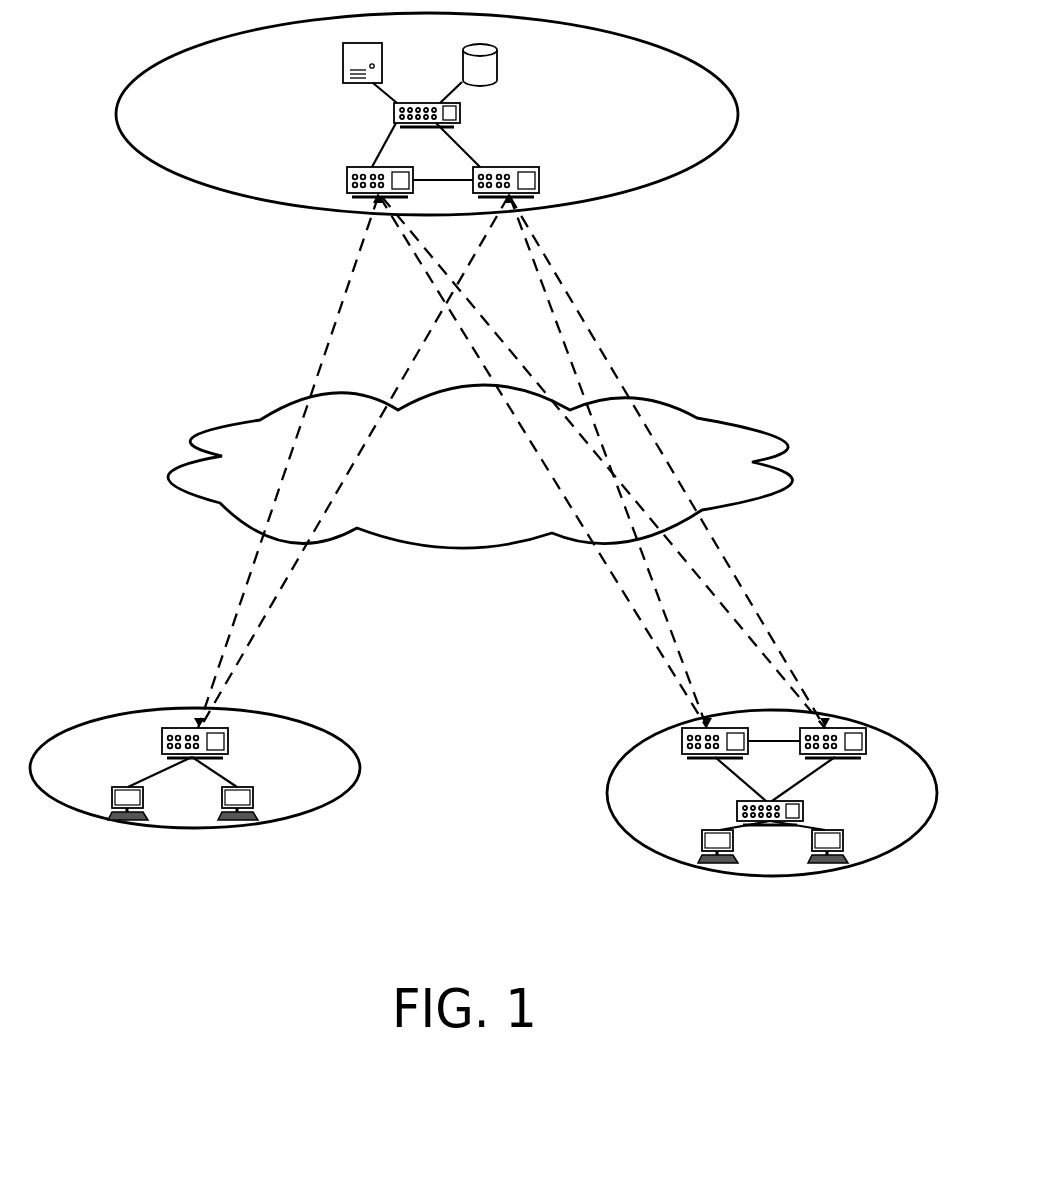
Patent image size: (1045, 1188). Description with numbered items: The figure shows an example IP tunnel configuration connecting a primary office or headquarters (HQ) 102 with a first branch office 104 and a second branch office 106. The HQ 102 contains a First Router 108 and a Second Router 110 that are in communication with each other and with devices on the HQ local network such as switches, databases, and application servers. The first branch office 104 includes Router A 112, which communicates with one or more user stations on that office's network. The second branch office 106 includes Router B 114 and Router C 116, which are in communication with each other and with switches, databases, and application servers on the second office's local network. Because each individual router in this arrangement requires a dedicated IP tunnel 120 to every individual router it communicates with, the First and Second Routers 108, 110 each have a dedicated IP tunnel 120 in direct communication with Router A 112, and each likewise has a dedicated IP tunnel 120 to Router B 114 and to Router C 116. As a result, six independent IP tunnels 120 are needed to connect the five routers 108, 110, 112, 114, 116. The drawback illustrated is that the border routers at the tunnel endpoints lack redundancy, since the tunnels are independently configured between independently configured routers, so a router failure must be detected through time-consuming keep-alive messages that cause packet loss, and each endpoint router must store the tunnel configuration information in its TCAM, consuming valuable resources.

The headquarters (HQ) 102 is at (737, 124).
The first branch office 104 is at (360, 768).
The second branch office 106 is at (607, 800).
The First Router 108 is at (347, 180).
The Second Router 110 is at (538, 177).
The Router A 112 is at (229, 742).
The Router B 114 is at (682, 741).
The Router C 116 is at (867, 741).
The IP tunnel 120 is at (682, 640).